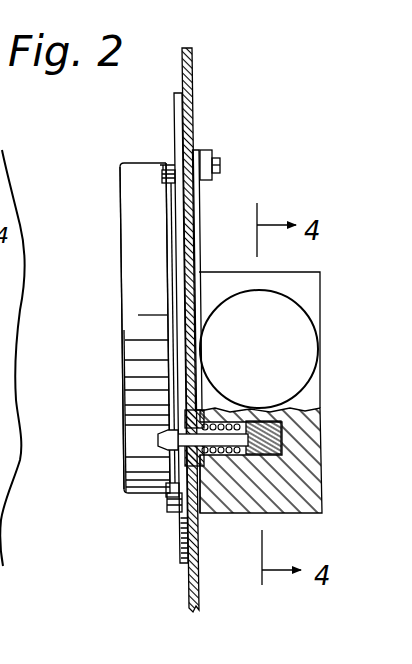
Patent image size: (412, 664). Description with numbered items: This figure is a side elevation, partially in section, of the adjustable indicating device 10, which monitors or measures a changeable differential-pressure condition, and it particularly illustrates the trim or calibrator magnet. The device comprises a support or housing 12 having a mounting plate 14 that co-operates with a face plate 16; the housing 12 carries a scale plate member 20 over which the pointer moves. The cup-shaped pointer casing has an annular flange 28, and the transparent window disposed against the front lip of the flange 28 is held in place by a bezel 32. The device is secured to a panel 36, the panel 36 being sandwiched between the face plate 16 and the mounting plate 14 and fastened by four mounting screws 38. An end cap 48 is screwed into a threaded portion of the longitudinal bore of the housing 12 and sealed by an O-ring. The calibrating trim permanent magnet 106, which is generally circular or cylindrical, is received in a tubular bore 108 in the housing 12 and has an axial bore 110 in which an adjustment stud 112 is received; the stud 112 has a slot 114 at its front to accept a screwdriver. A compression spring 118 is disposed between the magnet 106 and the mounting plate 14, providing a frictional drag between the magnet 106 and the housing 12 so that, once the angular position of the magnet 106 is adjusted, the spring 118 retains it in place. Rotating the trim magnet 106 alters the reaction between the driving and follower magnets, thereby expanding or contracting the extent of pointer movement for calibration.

The adjustable indicating device 10 is at (106, 178).
The support or housing 12 is at (287, 505).
The mounting plate 14 is at (200, 239).
The face plate 16 is at (178, 212).
The scale plate member 20 is at (0, 294).
The annular flange 28 is at (172, 226).
The bezel 32 is at (130, 264).
The panel 36 is at (193, 73).
The mounting screws 38 is at (165, 163).
The end cap 48 is at (302, 340).
The trim permanent magnet 106 is at (283, 448).
The tubular bore 108 is at (241, 458).
The axial bore 110 is at (258, 434).
The adjustment stud 112 is at (183, 458).
The slot 114 is at (177, 440).
The compression spring 118 is at (219, 462).